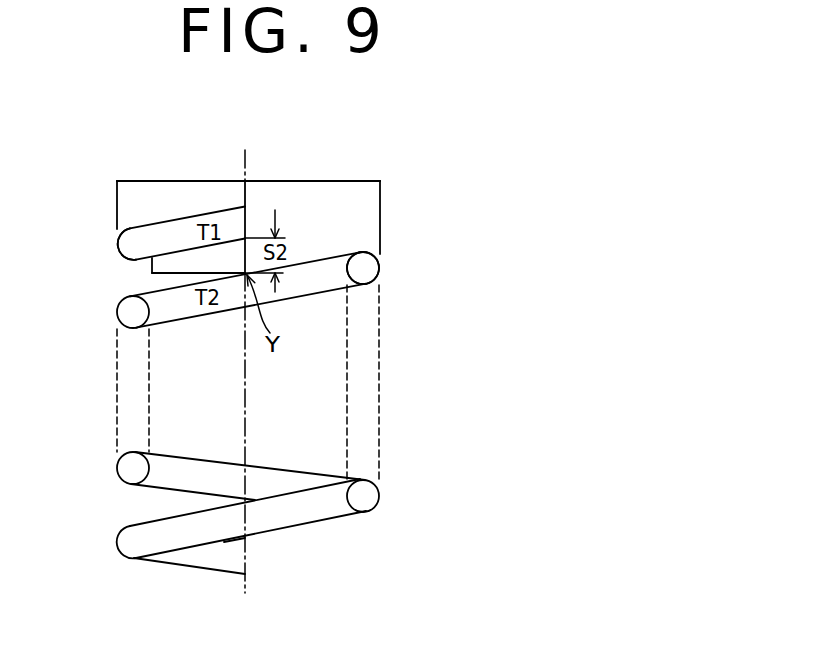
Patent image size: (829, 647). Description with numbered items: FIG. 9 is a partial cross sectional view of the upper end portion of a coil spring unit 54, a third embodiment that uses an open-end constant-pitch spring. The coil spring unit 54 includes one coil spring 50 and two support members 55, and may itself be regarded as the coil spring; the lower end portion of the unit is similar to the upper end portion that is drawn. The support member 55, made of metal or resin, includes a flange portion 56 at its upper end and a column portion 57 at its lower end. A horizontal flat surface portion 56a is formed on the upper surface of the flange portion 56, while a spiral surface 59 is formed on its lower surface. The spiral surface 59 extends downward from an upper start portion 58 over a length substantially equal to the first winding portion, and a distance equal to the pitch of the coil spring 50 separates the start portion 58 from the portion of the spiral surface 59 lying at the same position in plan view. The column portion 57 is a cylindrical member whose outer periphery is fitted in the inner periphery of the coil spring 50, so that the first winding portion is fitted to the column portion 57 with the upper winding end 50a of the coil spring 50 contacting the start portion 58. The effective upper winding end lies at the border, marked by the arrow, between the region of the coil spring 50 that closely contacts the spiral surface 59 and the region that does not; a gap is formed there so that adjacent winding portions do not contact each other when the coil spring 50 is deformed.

The coil spring 50 is at (373, 382).
The upper winding end 50a is at (232, 222).
The coil spring unit 54 is at (263, 203).
The support member 55 is at (141, 206).
The flange portion 56 is at (365, 182).
The horizontal flat surface portion 56a is at (340, 180).
The column portion 57 is at (157, 265).
The start portion 58 is at (247, 218).
The spiral surface 59 is at (120, 231).